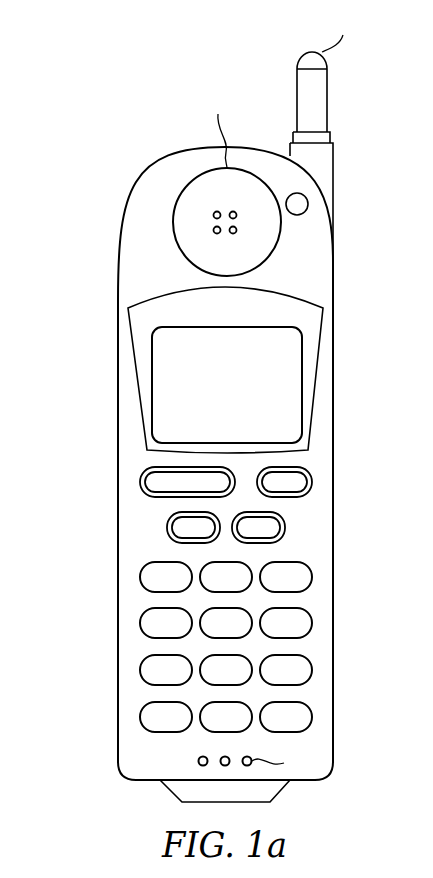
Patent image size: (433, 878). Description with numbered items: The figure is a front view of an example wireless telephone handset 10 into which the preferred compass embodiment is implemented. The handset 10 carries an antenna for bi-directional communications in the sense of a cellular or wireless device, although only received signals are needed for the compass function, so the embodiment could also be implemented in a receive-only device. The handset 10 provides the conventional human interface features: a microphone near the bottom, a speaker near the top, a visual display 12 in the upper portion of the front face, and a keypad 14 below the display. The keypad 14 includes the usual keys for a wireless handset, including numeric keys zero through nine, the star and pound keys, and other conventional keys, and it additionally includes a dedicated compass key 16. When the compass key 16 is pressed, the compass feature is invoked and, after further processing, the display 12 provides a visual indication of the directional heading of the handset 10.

The wireless telephone handset 10 is at (334, 620).
The visual display 12 is at (210, 403).
The keypad 14 is at (101, 462).
The COMPASS key 16 is at (147, 470).